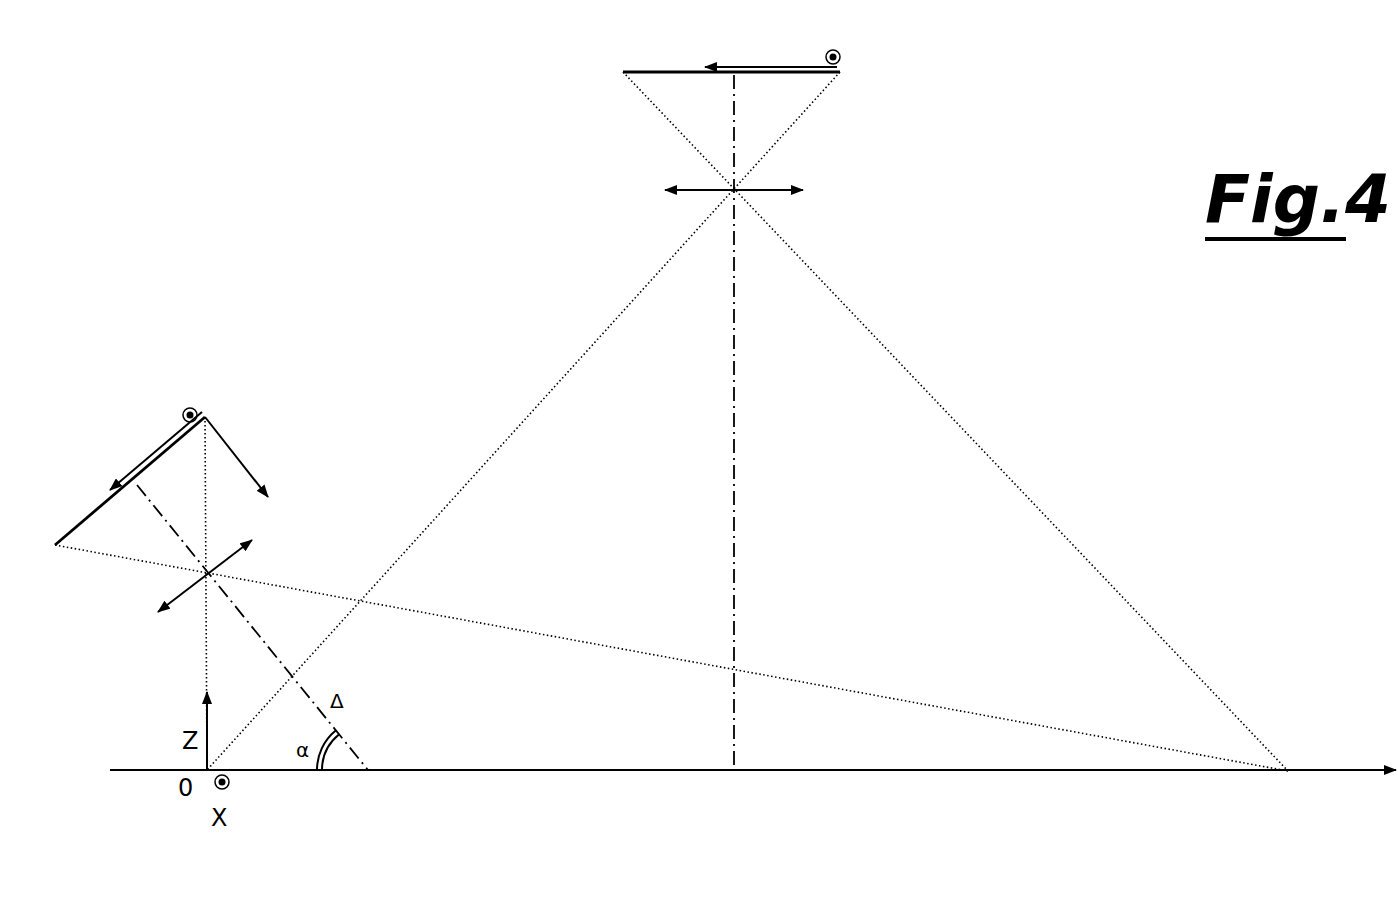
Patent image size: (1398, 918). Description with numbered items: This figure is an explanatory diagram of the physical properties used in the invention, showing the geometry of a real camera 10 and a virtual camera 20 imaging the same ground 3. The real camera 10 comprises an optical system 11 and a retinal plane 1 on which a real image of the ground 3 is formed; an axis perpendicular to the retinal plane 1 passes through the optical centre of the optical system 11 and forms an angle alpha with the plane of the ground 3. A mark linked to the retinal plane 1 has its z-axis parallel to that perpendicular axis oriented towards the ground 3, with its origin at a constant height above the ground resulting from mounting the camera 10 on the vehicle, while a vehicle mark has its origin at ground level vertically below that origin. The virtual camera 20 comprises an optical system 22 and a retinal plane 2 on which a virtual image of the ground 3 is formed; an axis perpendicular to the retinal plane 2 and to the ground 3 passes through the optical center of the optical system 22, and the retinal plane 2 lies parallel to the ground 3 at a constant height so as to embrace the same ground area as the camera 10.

The retinal plane 1 is at (93, 513).
The retinal plane 2 is at (657, 72).
The ground 3 is at (1187, 772).
The real camera 10 is at (125, 577).
The optical system 11 is at (182, 588).
The virtual camera 20 is at (808, 142).
The optical system 22 is at (693, 188).